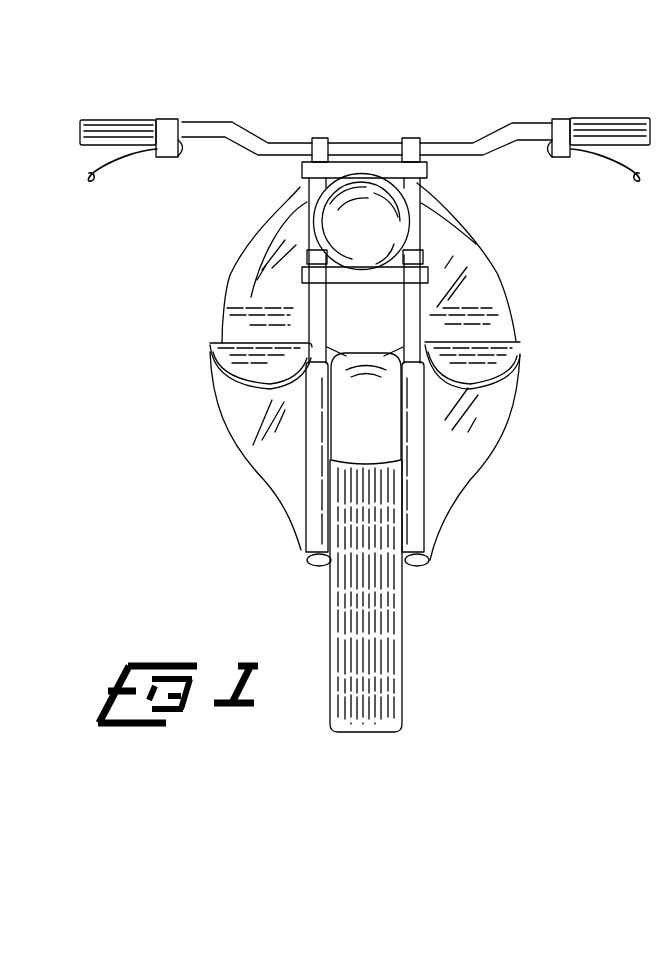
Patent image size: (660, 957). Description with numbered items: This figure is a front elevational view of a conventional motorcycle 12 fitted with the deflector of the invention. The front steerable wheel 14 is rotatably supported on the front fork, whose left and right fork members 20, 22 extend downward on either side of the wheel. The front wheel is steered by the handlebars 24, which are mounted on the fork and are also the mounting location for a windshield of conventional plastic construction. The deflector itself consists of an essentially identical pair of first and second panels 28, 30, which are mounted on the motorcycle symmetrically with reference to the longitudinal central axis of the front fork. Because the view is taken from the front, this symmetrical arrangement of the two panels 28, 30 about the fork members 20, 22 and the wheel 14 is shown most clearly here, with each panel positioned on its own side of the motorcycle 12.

The motorcycle 12 is at (321, 108).
The front steerable wheel 14 is at (393, 643).
The left fork member 20 is at (413, 192).
The right fork member 22 is at (315, 192).
The handlebars 24 is at (527, 130).
The first panel 28 is at (203, 289).
The second panel 30 is at (216, 472).